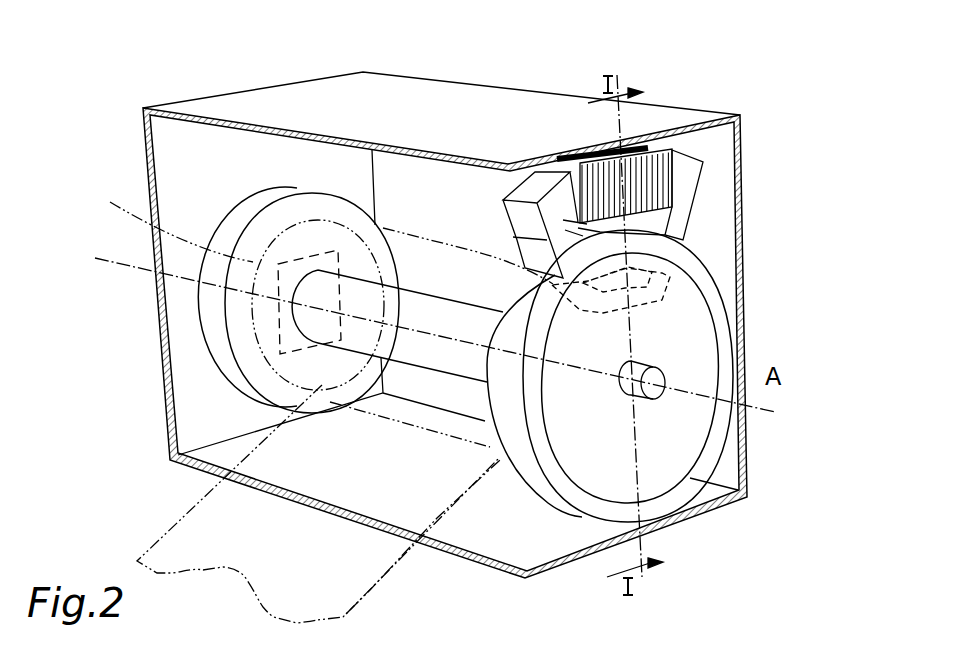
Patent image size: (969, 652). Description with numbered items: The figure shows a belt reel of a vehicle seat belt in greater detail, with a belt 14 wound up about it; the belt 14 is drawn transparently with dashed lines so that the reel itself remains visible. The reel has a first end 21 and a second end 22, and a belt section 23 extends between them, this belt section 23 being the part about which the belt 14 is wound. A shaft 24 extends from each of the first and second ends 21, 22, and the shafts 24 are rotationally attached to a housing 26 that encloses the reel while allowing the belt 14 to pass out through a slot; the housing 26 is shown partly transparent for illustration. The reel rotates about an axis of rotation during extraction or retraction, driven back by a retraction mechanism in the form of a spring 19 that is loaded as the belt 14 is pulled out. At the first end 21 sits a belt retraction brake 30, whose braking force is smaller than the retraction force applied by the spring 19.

The belt 14 is at (212, 510).
The spring 19 is at (314, 311).
The first end 21 is at (570, 468).
The second end 22 is at (258, 214).
The belt section 23 is at (427, 303).
The shaft 24 is at (640, 368).
The housing 26 is at (262, 85).
The belt retraction brake 30 is at (690, 177).